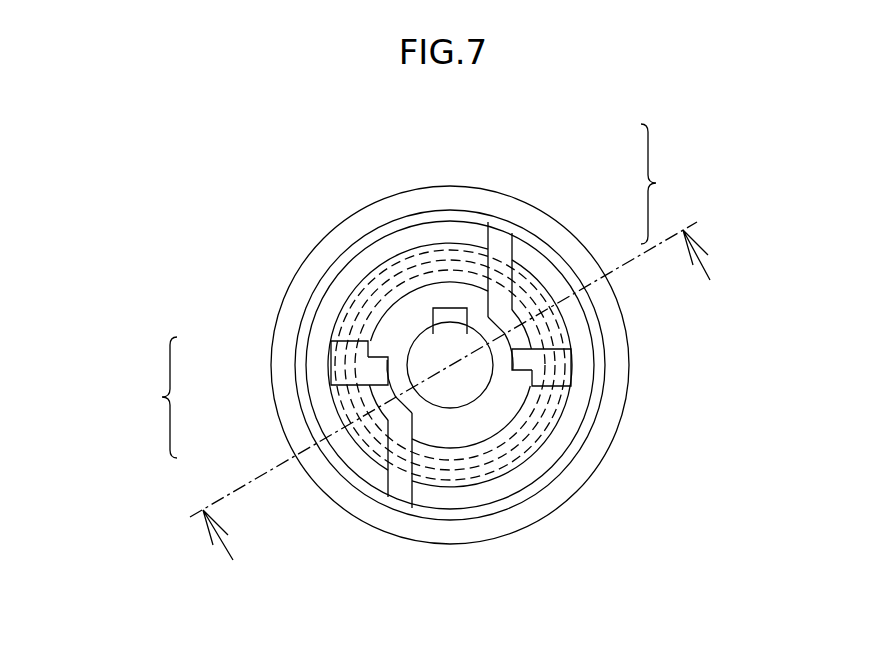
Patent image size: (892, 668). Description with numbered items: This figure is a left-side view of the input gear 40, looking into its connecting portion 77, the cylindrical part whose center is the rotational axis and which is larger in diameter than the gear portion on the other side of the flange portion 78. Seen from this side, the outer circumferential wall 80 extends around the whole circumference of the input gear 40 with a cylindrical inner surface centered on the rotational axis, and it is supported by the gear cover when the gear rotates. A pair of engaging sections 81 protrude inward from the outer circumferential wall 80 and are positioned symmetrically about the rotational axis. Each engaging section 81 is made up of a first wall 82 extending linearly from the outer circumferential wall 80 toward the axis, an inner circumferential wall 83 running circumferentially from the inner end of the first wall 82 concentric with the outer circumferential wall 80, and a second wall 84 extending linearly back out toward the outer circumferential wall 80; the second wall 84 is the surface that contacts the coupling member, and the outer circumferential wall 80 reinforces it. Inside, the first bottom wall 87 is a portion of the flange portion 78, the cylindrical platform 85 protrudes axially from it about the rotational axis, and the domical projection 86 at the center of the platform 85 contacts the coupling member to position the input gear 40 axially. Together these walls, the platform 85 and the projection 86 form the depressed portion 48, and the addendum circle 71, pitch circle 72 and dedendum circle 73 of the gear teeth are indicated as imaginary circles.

The input gear 40 is at (520, 108).
The depressed portion 48 is at (439, 290).
The addendum circle 71 is at (372, 293).
The pitch circle 72 is at (355, 310).
The dedendum circle 73 is at (338, 332).
The connecting portion 77 is at (597, 437).
The flange portion 78 is at (623, 400).
The outer circumferential wall 80 is at (375, 255).
The engaging section 81 is at (408, 291).
The first wall 82 is at (548, 366).
The inner circumferential wall 83 is at (522, 350).
The second wall 84 is at (498, 242).
The platform 85 is at (506, 397).
The projection 86 is at (455, 383).
The first bottom wall 87 is at (438, 458).